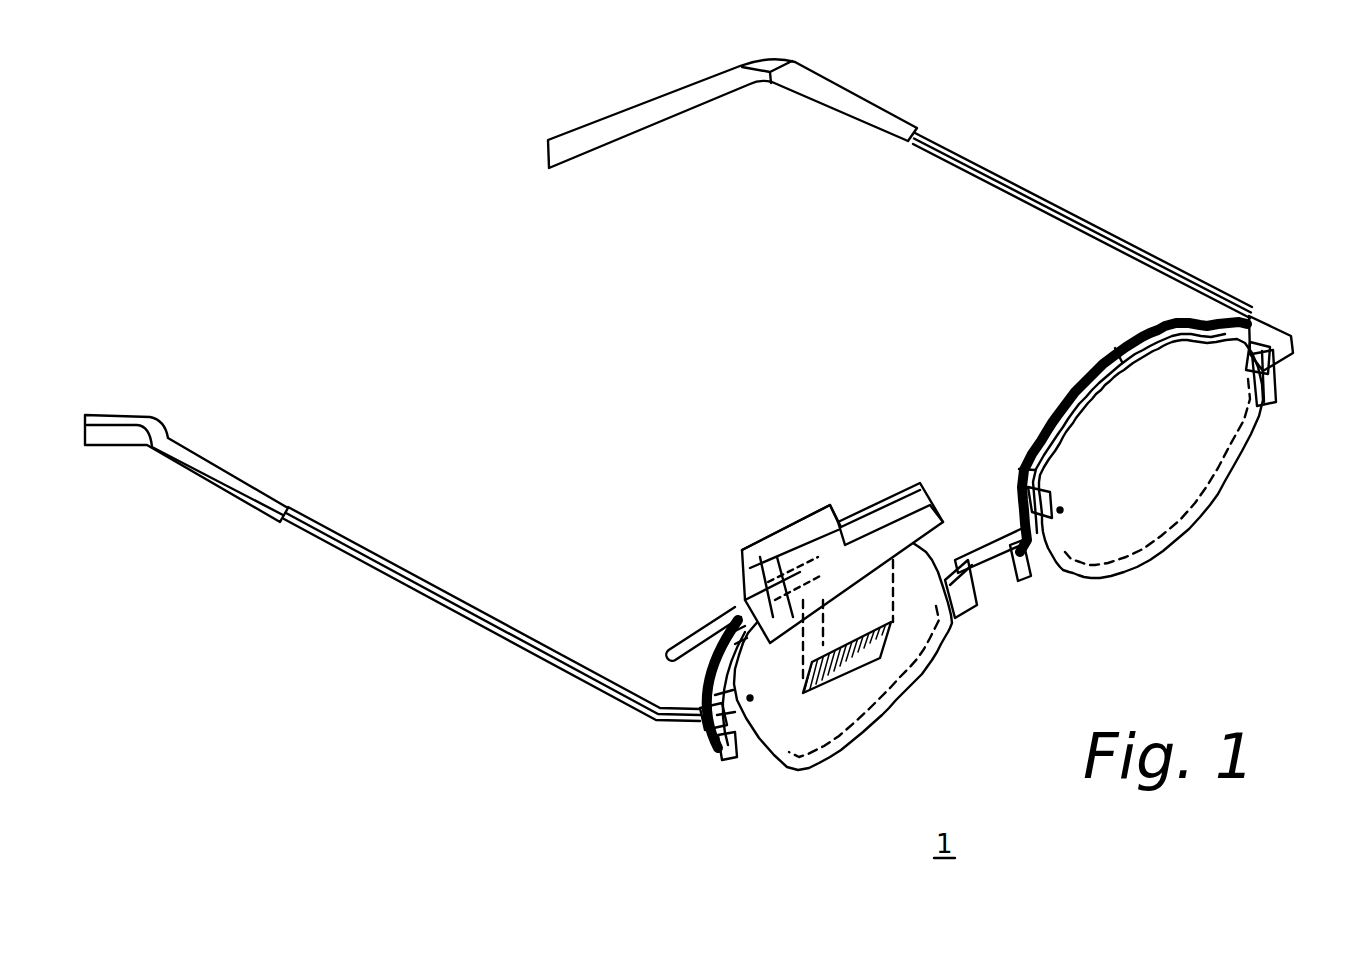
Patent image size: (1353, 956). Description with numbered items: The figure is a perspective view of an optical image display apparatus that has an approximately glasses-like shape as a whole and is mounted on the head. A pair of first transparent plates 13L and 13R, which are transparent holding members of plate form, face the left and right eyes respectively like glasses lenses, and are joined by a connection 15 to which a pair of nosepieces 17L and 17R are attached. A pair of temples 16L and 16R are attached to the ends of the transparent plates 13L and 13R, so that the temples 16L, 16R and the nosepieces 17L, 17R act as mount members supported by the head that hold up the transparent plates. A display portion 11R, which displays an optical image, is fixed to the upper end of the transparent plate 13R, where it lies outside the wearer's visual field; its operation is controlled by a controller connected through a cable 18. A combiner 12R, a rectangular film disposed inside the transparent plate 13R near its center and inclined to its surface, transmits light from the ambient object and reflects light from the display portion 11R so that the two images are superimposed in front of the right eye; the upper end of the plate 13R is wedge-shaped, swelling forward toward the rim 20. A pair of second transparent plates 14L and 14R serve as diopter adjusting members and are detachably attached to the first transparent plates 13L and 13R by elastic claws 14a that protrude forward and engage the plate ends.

The display portion 11R is at (878, 515).
The combiner 12R is at (880, 660).
The first transparent plate 13R is at (812, 742).
The first transparent plate 13L is at (1207, 500).
The second transparent plate 14R is at (712, 748).
The second transparent plate 14L is at (1048, 412).
The claws 14a is at (1268, 408).
The connection 15 is at (990, 545).
The temple 16R is at (485, 608).
The temple 16L is at (1054, 222).
The nosepiece 17R is at (970, 618).
The nosepiece 17L is at (1020, 585).
The cable 18 is at (700, 628).
The rim 20 is at (1112, 366).